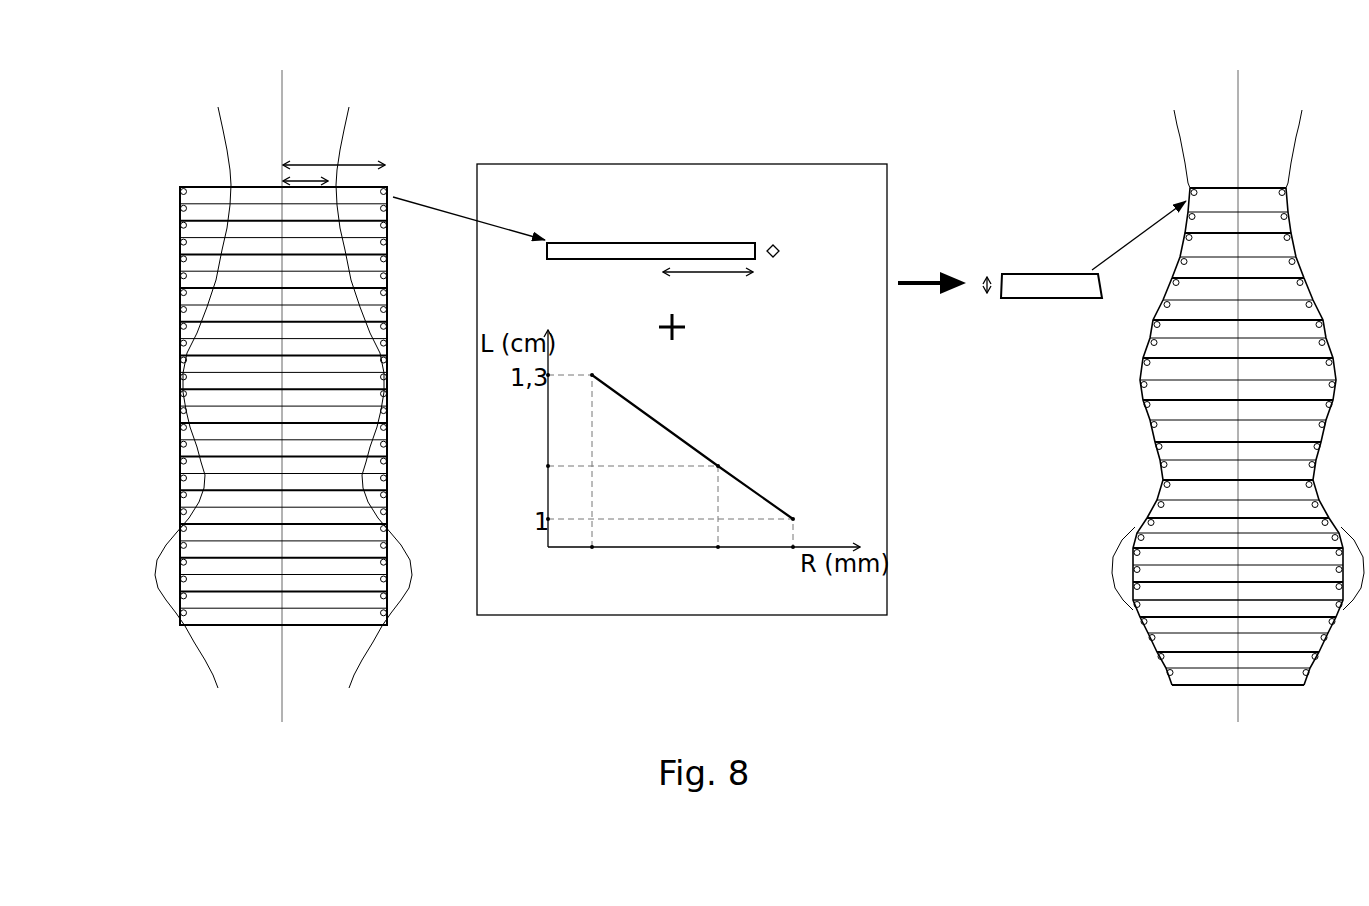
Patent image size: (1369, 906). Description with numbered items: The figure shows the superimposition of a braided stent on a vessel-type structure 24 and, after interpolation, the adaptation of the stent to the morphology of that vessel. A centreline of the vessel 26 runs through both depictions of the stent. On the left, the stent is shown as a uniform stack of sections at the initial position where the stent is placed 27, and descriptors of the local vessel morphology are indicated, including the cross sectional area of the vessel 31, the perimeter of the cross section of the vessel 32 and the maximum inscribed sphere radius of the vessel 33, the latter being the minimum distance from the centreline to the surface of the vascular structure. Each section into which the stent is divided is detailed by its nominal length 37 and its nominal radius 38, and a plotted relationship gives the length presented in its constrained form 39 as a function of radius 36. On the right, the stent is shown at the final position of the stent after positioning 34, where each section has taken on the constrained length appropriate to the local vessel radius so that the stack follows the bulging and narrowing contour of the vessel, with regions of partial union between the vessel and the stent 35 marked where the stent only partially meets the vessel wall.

The vessel-type structure 24 is at (222, 112).
The centreline of the vessel 26 is at (284, 112).
The initial position where the stent is placed 27 is at (1236, 185).
The cross sectional area of the vessel 31 is at (238, 184).
The perimeter of the cross section of the vessel 32 is at (1253, 185).
The maximum inscribed sphere radius of the vessel 33 is at (176, 268).
The final position of the stent after positioning 34 is at (1237, 684).
The regions of partial union between the vessel and the stent 35 is at (1130, 572).
The radius R 36 is at (313, 181).
The nominal length 37 is at (786, 246).
The nominal radius 38 is at (301, 163).
The length presented in its constrained form 39 is at (978, 293).